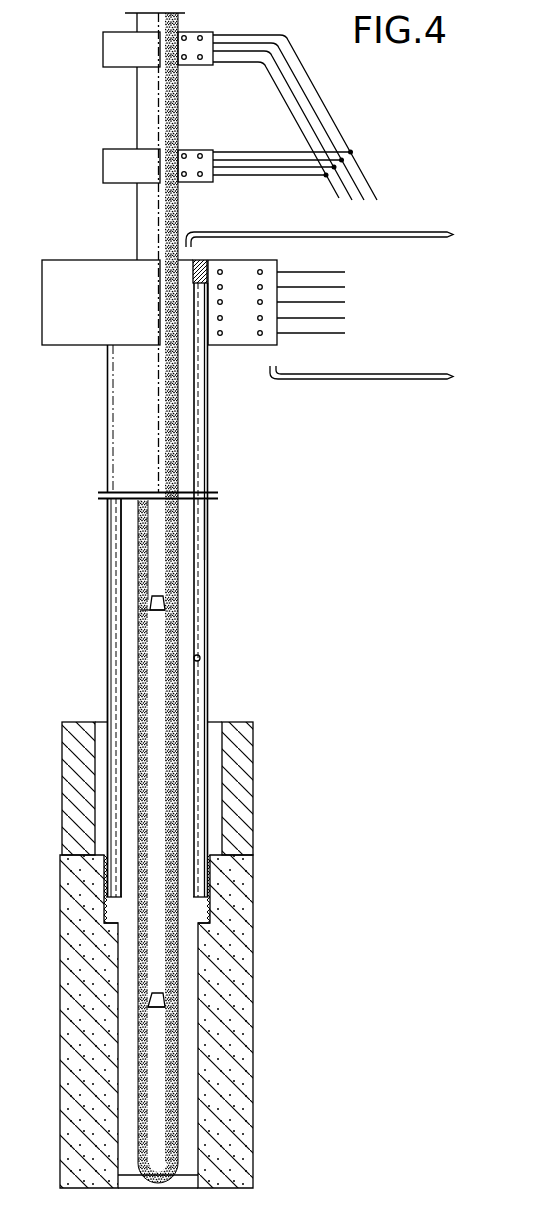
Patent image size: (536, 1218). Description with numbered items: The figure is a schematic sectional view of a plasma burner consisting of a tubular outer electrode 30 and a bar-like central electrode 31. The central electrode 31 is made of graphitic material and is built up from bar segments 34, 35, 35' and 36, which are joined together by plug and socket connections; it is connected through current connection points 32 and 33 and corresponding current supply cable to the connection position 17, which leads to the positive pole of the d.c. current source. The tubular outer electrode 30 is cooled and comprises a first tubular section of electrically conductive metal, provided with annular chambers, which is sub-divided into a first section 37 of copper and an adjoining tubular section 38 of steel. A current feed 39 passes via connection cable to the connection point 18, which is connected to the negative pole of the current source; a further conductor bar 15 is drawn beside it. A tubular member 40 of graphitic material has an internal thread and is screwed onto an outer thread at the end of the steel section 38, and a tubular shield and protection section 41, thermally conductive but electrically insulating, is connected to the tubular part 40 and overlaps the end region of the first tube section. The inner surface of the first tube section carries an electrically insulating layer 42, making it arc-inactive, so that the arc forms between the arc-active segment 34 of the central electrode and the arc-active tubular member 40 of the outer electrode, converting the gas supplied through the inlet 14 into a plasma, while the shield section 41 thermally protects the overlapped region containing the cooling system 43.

The inlet 14 is at (392, 238).
The negative conductor bar 15 is at (338, 381).
The connection position 17 is at (340, 216).
The connection point 18 is at (352, 262).
The tubular outer electrode 30 is at (208, 558).
The bar-like central electrode 31 is at (142, 604).
The current connection point 32 is at (112, 50).
The current connection point 33 is at (112, 166).
The bar segment 34 is at (166, 1070).
The bar segment 35 is at (116, 900).
The bar segment 35' is at (102, 550).
The bar segment 36 is at (137, 234).
The first section of copper 37 is at (212, 477).
The tubular section of steel 38 is at (208, 620).
The current feed 39 is at (73, 330).
The tubular member 40 is at (82, 1043).
The tubular shield and protection section 41 is at (252, 748).
The insulating layer 42 is at (200, 655).
The cooling system 43 is at (207, 525).